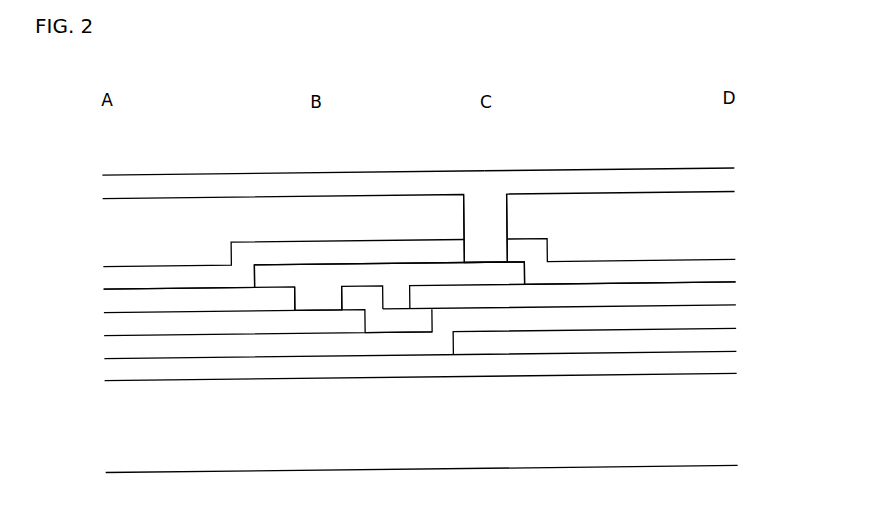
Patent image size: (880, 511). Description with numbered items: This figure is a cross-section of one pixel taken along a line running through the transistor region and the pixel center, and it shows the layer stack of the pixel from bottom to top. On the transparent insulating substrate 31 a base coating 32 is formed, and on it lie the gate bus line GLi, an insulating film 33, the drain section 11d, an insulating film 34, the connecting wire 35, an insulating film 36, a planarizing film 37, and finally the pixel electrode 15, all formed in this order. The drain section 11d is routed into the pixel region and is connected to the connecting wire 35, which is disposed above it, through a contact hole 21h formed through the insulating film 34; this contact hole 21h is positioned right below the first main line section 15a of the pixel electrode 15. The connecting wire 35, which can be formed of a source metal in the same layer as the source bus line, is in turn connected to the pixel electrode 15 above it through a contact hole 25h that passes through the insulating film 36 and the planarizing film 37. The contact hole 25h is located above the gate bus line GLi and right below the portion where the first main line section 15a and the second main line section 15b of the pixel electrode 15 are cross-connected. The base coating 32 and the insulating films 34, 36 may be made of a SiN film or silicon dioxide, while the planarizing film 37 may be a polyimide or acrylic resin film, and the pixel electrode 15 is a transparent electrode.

The pixel electrode 15 is at (731, 181).
The first main line section 15a is at (376, 172).
The second main line section 15b is at (625, 168).
The contact hole 21h is at (340, 298).
The contact hole 25h is at (508, 211).
The transparent insulating substrate 31 is at (731, 420).
The base coating 32 is at (731, 363).
The insulating film 33 is at (731, 317).
The insulating film 34 is at (107, 300).
The connecting wire 35 is at (440, 273).
The insulating film 36 is at (107, 278).
The planarizing film 37 is at (107, 233).
The drain section 11d is at (107, 325).
The gate bus line GLi is at (731, 338).